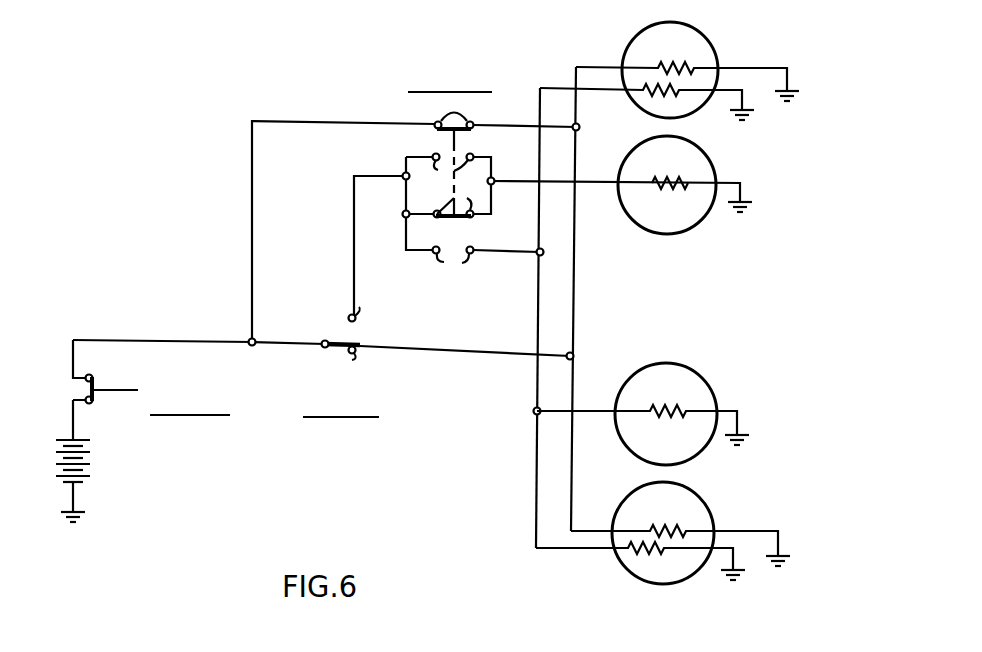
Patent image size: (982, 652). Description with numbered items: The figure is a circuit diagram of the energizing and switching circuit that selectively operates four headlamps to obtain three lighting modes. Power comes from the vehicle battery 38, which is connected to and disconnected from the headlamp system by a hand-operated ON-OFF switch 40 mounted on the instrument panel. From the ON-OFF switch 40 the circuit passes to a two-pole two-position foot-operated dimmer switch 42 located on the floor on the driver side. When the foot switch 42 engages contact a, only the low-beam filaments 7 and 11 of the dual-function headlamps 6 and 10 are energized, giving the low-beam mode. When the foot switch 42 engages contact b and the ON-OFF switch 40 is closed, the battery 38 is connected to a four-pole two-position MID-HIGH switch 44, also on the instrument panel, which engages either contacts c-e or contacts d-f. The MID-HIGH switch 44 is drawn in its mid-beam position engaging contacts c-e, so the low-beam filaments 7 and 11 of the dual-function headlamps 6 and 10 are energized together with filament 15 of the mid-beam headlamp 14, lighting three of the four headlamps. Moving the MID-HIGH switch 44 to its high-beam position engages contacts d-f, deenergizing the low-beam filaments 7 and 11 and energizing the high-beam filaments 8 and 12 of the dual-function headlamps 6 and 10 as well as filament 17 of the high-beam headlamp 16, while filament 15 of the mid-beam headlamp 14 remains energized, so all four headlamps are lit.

The dual-function headlamp 6 is at (699, 496).
The low-beam filament 7 is at (679, 530).
The high-beam filament 8 is at (640, 550).
The dual-function headlamp 10 is at (700, 33).
The low-beam filament 11 is at (660, 63).
The high-beam filament 12 is at (652, 93).
The mid-beam headlamp 14 is at (626, 209).
The filament 15 is at (655, 178).
The high-beam headlamp 16 is at (703, 378).
The filament 17 is at (688, 409).
The battery 38 is at (57, 459).
The ON-OFF switch 40 is at (112, 388).
The foot switch 42 is at (323, 347).
The MID-HIGH switch 44 is at (448, 139).